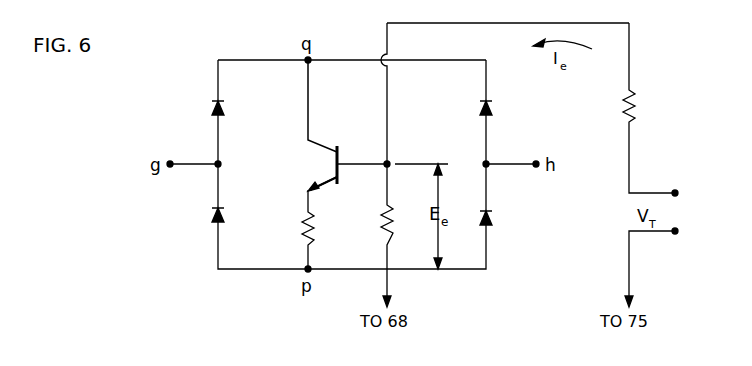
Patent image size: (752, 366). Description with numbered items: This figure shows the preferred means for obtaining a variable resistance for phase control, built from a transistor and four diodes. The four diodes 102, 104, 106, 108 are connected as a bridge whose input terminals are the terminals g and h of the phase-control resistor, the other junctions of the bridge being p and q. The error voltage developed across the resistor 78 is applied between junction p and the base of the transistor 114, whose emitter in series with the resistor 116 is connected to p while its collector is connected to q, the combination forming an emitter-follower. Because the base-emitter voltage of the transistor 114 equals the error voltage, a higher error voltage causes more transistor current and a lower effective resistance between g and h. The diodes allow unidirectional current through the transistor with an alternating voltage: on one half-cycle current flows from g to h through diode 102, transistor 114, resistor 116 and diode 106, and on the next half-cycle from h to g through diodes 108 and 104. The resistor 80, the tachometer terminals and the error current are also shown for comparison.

The diode 102 is at (201, 109).
The diode 104 is at (198, 217).
The diode 106 is at (503, 220).
The diode 108 is at (503, 109).
The transistor 114 is at (336, 125).
The resistor 116 is at (292, 229).
The resistor 78 is at (373, 235).
The resistor 80 is at (649, 108).